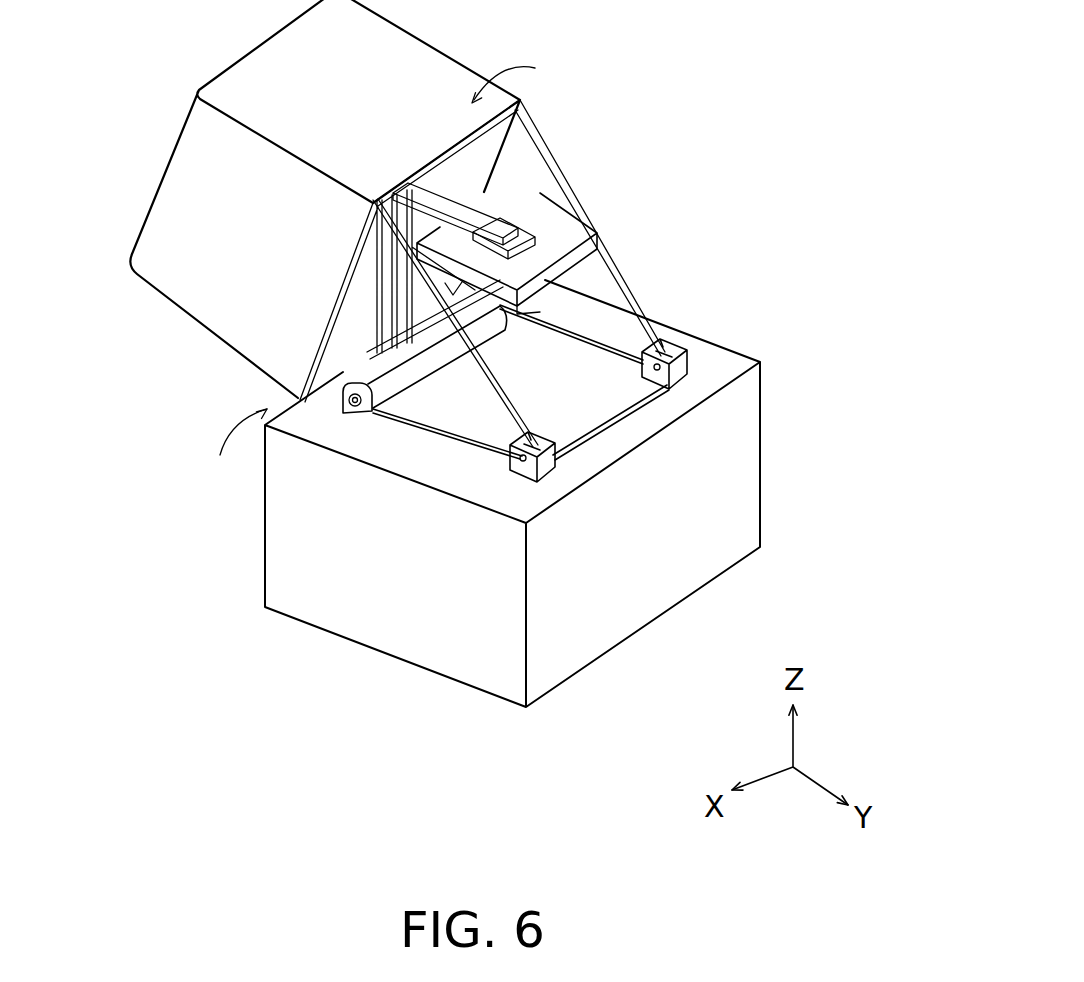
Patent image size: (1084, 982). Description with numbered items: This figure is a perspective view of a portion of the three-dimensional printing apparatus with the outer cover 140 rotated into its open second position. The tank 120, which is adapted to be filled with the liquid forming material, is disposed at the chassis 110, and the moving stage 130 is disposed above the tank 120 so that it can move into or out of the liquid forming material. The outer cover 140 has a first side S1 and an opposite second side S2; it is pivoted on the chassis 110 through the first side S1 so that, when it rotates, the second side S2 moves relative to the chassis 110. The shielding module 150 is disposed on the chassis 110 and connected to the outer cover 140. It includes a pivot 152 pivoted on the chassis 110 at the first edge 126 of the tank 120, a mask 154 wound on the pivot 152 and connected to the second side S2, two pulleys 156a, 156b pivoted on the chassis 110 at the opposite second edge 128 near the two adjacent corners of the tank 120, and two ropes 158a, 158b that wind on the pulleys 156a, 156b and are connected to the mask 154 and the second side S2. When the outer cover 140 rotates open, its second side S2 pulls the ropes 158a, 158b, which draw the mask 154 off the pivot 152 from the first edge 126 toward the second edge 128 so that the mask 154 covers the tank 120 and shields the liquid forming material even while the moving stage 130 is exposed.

The chassis 110 is at (743, 497).
The tank 120 is at (557, 397).
The first edge 126 is at (353, 418).
The second edge 128 is at (558, 487).
The moving stage 130 is at (560, 233).
The outer cover 140 is at (437, 67).
The shielding module 150 is at (372, 359).
The pivot 152 is at (357, 381).
The mask 154 is at (435, 415).
The pulley 156a is at (523, 460).
The pulley 156b is at (668, 350).
The rope 158a is at (497, 390).
The rope 158b is at (622, 270).
The first side S1 is at (230, 453).
The second side S2 is at (523, 75).